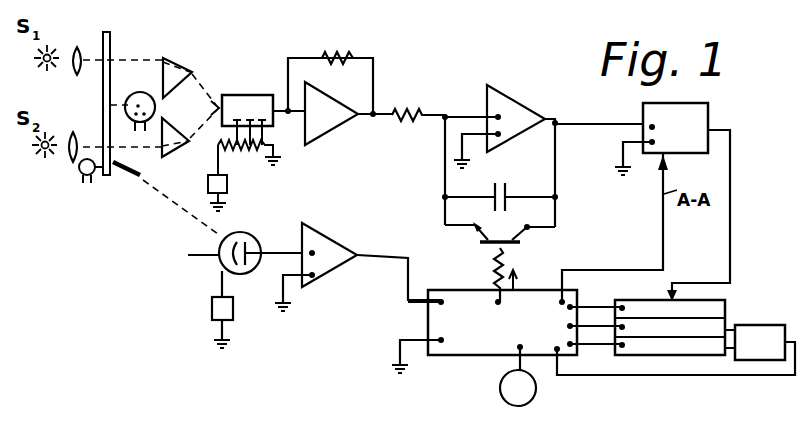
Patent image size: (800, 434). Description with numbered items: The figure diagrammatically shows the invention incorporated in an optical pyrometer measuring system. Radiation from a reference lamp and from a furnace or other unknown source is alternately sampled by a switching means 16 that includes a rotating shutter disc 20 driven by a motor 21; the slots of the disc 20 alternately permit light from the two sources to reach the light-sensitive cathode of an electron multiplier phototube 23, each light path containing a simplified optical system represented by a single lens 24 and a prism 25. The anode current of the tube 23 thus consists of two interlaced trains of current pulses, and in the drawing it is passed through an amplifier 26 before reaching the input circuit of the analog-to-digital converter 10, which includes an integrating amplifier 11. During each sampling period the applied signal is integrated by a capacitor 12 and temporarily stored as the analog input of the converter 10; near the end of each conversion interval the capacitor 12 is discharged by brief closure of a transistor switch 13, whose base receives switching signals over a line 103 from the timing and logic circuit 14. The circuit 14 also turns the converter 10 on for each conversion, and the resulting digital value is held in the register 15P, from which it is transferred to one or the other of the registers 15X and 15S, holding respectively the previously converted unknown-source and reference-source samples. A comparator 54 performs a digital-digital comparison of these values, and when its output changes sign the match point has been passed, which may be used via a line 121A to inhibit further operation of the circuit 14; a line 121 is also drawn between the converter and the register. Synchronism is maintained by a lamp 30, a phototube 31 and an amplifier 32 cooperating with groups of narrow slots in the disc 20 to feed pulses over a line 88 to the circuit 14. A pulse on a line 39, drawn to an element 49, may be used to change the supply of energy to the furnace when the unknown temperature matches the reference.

The analog-to-digital converter 10 is at (712, 113).
The integrating amplifier 11 is at (509, 101).
The integrating capacitor 12 is at (508, 190).
The transistor switch 13 is at (522, 240).
The timing and logic circuit 14 is at (544, 358).
The ADC register 15P is at (708, 310).
The register 15X is at (648, 330).
The register 15S is at (688, 347).
The switching means 16 is at (159, 54).
The rotating shutter disc 20 is at (111, 35).
The motor 21 is at (155, 107).
The electron multiplier phototube 23 is at (240, 94).
The lens 24 is at (74, 47).
The prism 25 is at (176, 58).
The amplifier 26 is at (332, 134).
The lamp 30 is at (87, 159).
The phototube 31 is at (234, 290).
The amplifier 32 is at (323, 236).
The line 39 is at (515, 361).
The indicator 49 is at (501, 395).
The comparator 54 is at (752, 330).
The line 88 is at (382, 257).
The line 103 is at (492, 258).
The line 121 is at (663, 247).
The line 121A is at (740, 377).